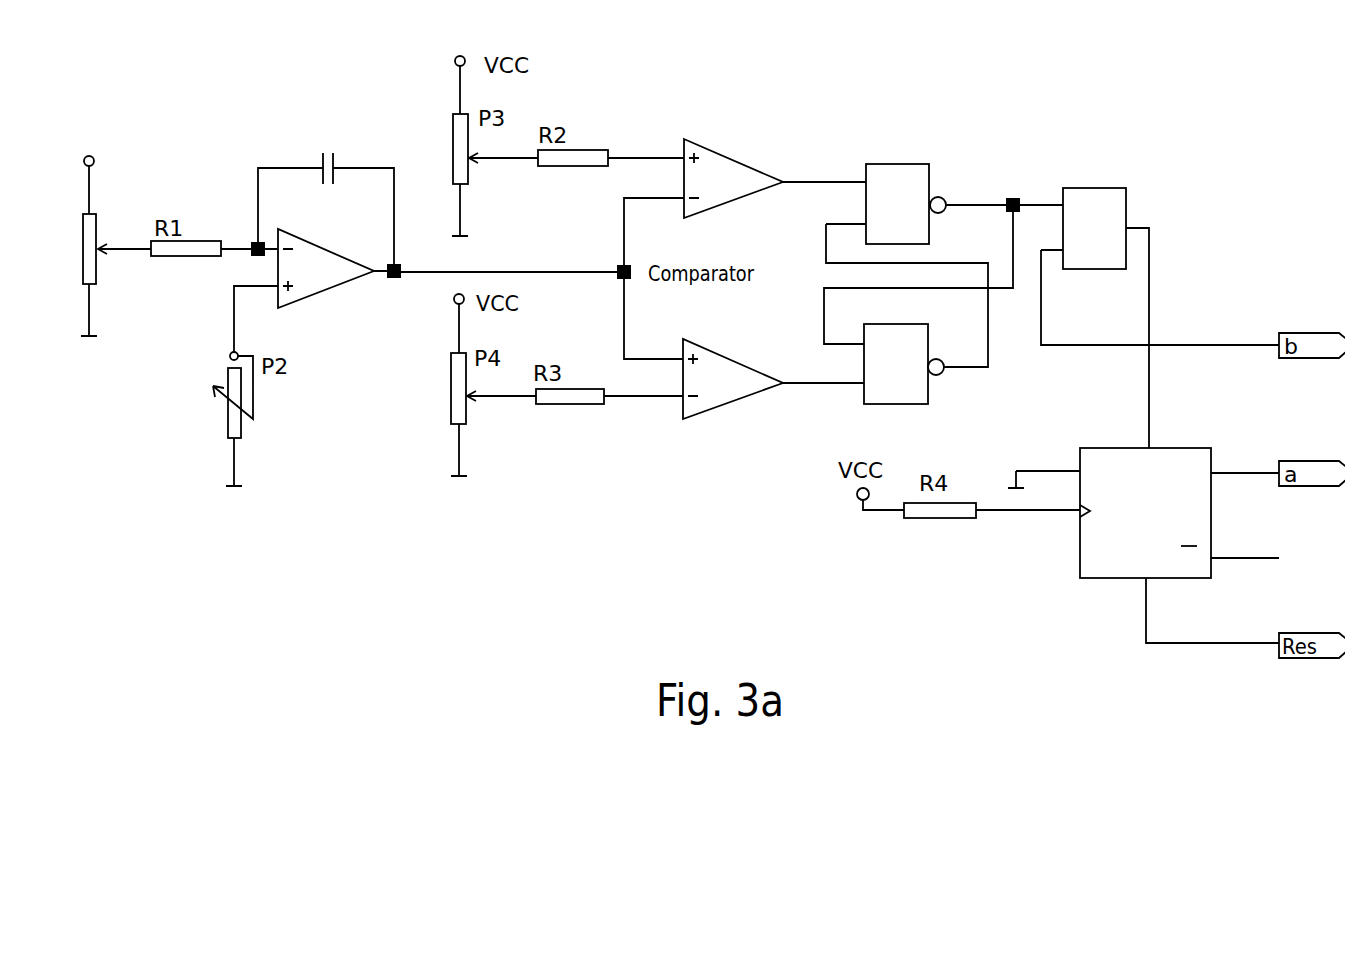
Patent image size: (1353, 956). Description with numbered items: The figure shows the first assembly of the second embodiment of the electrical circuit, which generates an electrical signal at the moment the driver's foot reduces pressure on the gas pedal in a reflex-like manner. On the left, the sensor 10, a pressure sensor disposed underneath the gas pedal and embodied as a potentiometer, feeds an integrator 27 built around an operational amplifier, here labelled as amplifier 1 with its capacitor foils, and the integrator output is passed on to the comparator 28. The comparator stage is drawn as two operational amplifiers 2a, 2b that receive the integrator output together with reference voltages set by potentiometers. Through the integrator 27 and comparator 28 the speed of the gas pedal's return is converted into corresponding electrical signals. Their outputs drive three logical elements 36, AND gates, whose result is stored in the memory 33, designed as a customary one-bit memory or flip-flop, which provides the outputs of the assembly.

The sensor 10 is at (93, 213).
The integrator operational amplifier 1 is at (317, 286).
The integrator 27 is at (360, 187).
The first comparator operational amplifier 2a is at (712, 197).
The second comparator operational amplifier 2b is at (773, 374).
The comparator 28 is at (798, 165).
The logical elements 36 is at (927, 165).
The memory 33 is at (1087, 577).